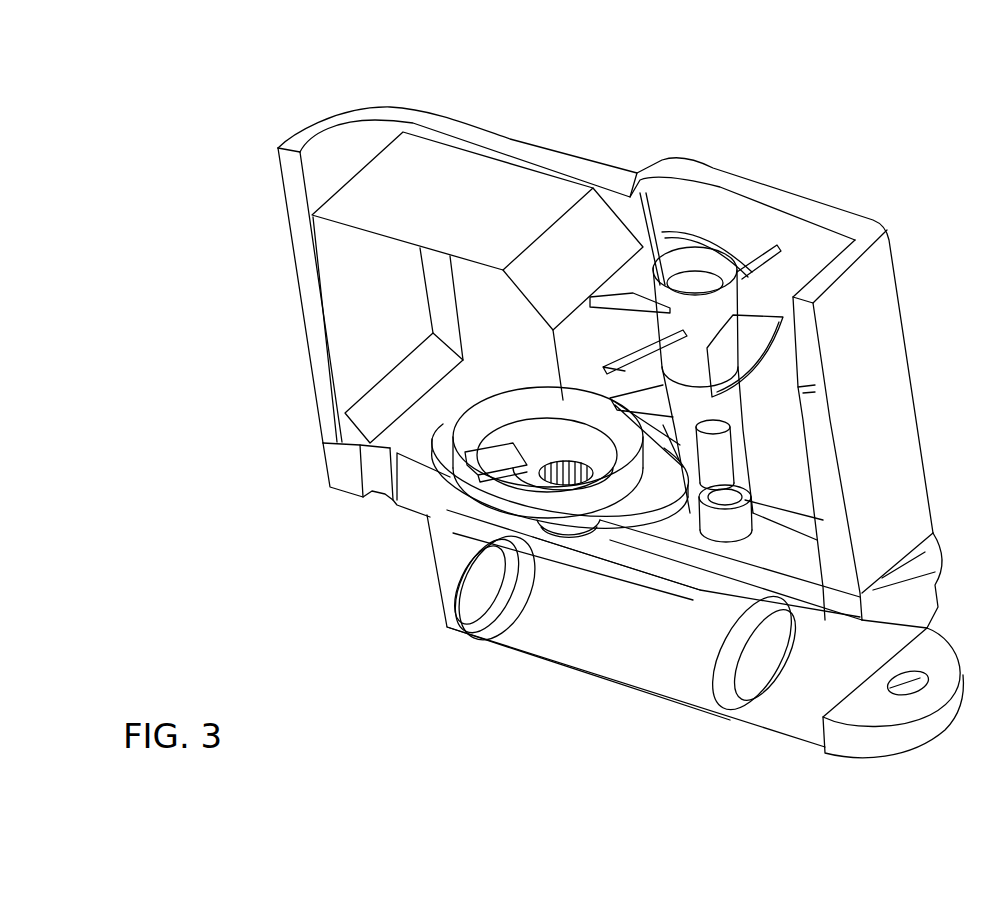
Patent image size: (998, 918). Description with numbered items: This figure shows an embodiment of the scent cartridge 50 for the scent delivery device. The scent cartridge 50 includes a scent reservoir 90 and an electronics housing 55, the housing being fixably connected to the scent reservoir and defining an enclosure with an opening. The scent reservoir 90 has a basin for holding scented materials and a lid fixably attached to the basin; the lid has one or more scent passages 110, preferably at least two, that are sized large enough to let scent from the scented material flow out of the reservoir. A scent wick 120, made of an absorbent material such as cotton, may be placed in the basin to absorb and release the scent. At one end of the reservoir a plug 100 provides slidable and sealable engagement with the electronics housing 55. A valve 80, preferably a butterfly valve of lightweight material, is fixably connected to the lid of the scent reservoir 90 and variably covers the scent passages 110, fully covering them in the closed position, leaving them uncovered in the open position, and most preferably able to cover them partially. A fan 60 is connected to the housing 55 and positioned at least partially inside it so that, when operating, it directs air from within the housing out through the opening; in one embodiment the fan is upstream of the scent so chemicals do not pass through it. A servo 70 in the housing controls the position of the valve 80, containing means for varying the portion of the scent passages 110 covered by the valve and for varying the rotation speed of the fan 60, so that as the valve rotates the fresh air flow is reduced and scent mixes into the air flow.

The scent cartridge 50 is at (400, 98).
The electronics housing 55 is at (310, 125).
The fan 60 is at (777, 247).
The servo 70 is at (607, 207).
The valve 80 is at (440, 556).
The scent reservoir 90 is at (522, 650).
The plug 100 is at (933, 747).
The scent passages 110 is at (648, 573).
The scent wick 120 is at (712, 643).